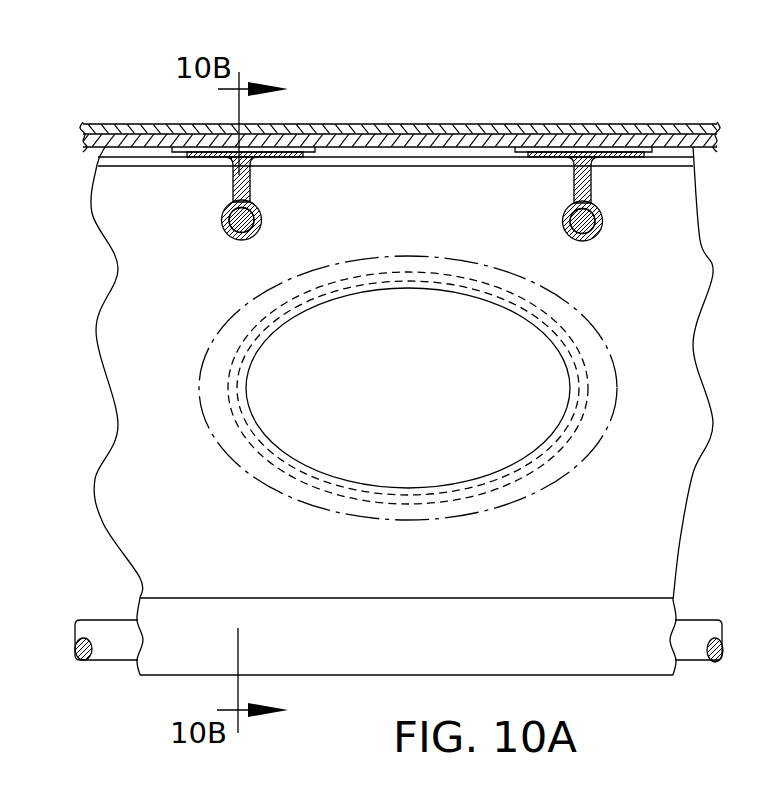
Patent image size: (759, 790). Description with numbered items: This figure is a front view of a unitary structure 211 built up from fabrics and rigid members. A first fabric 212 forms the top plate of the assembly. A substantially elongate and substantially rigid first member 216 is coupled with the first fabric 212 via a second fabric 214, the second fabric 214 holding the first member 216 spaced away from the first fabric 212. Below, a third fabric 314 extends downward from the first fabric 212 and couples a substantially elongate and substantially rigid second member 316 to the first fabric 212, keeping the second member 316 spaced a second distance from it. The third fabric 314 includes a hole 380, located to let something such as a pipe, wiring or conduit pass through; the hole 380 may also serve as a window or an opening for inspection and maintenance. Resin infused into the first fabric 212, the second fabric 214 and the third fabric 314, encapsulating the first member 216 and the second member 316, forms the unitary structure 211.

The unitary structure 211 is at (656, 81).
The first fabric 212 is at (702, 143).
The second fabric 214 is at (592, 178).
The first member 216 is at (596, 232).
The third fabric 314 is at (668, 377).
The second member 316 is at (697, 633).
The hole 380 is at (417, 408).